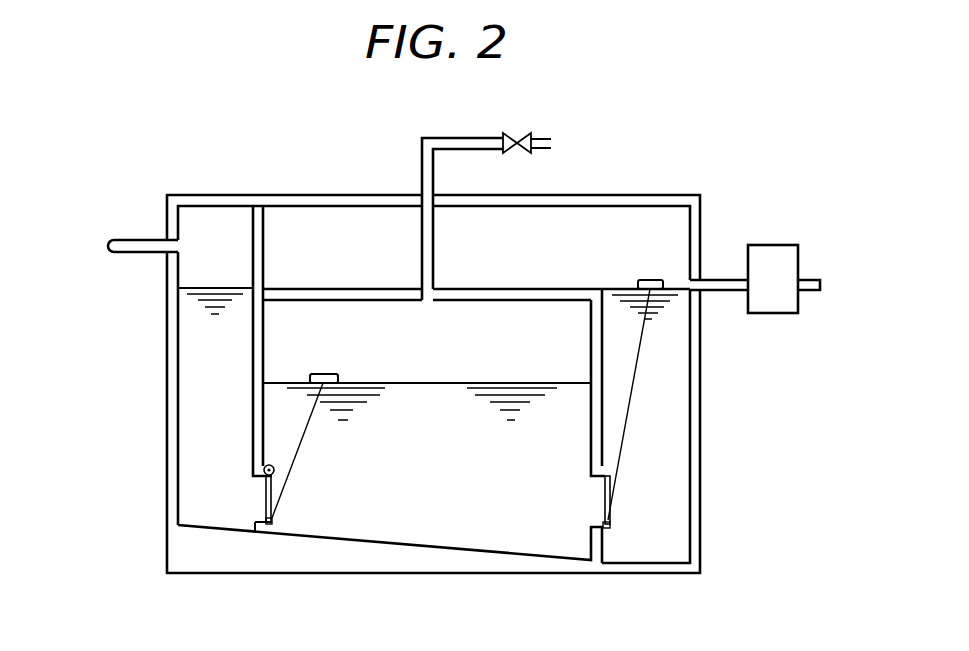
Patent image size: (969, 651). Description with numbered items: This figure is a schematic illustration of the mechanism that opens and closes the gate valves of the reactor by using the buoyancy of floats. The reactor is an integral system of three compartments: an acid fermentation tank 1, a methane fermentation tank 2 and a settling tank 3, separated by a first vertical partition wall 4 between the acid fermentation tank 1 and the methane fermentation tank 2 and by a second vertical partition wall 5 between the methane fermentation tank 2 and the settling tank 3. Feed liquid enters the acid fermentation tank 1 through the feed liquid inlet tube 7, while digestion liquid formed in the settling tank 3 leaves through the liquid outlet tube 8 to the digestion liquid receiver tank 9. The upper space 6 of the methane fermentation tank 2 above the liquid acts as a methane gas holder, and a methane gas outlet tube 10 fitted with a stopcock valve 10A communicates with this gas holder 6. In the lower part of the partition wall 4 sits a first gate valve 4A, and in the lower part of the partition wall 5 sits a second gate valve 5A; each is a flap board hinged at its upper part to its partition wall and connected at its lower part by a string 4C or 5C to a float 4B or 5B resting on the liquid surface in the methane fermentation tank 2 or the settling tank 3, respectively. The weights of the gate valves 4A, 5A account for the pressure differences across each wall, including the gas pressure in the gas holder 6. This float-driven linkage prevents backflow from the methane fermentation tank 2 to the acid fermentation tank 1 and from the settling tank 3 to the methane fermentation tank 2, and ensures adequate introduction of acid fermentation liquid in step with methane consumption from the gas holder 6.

The acid fermentation tank 1 is at (207, 442).
The methane fermentation tank 2 is at (468, 522).
The settling tank 3 is at (667, 477).
The first vertical partition wall 4 is at (253, 405).
The first gate valve 4A is at (260, 510).
The float 4B is at (323, 373).
The string 4C is at (292, 473).
The second vertical partition wall 5 is at (603, 395).
The second gate valve 5A is at (613, 512).
The float 5B is at (660, 280).
The string 5C is at (628, 420).
The upper space 6 is at (515, 318).
The feed liquid inlet tube 7 is at (132, 250).
The liquid outlet tube 8 is at (728, 293).
The digestion liquid receiver tank 9 is at (783, 280).
The methane gas outlet tube 10 is at (458, 138).
The stopcock valve 10A is at (511, 134).